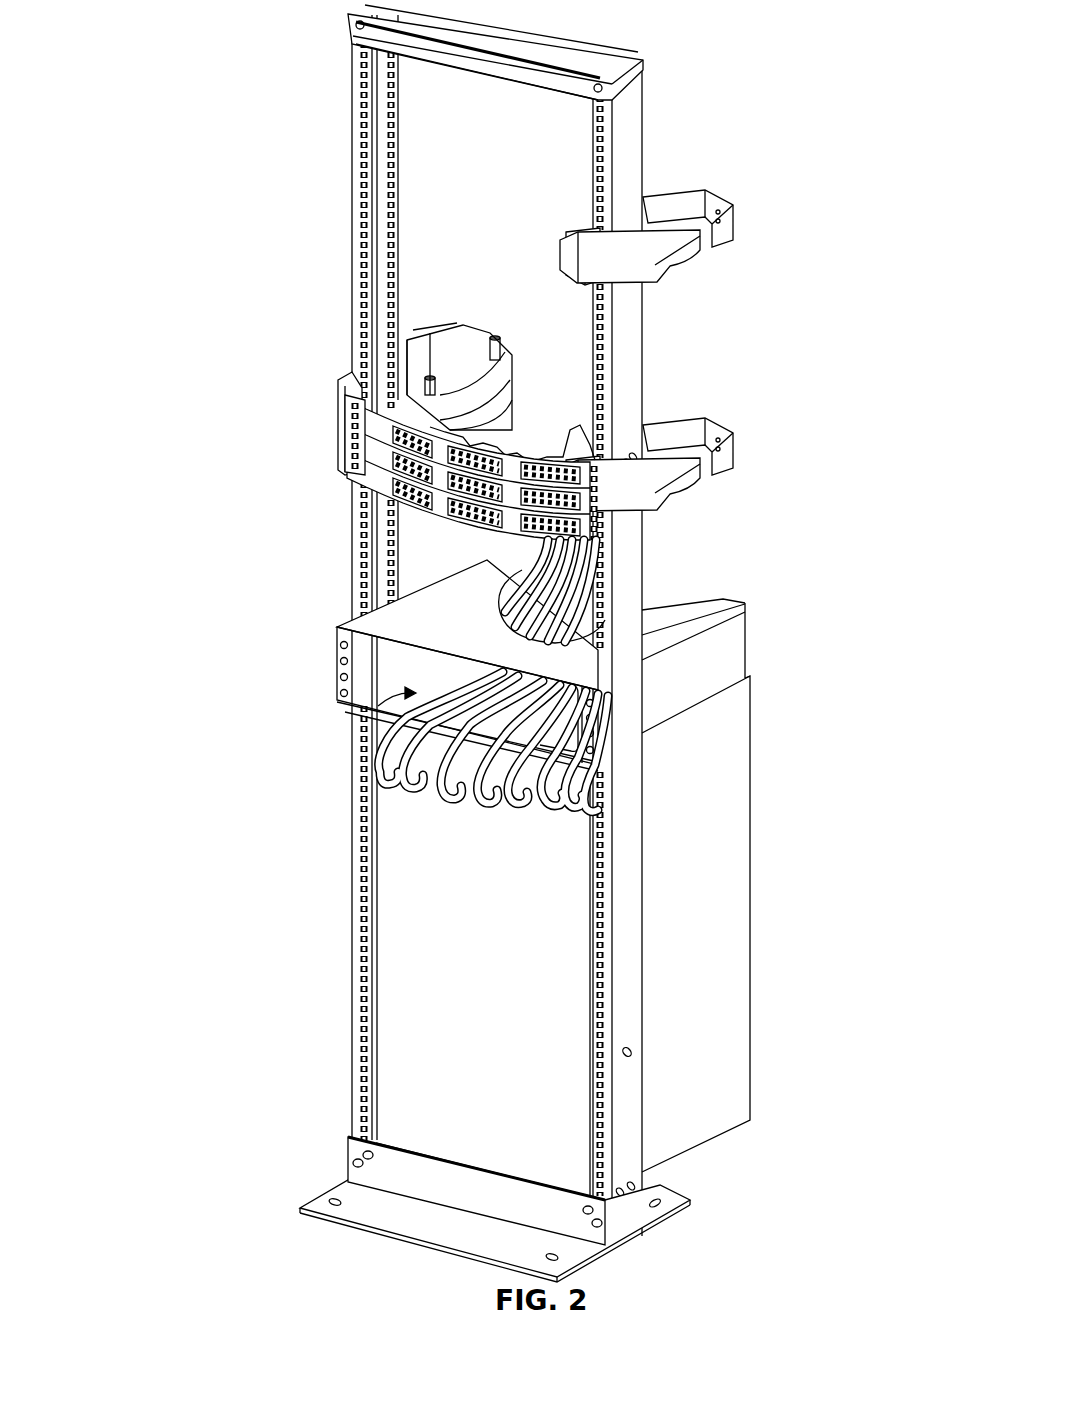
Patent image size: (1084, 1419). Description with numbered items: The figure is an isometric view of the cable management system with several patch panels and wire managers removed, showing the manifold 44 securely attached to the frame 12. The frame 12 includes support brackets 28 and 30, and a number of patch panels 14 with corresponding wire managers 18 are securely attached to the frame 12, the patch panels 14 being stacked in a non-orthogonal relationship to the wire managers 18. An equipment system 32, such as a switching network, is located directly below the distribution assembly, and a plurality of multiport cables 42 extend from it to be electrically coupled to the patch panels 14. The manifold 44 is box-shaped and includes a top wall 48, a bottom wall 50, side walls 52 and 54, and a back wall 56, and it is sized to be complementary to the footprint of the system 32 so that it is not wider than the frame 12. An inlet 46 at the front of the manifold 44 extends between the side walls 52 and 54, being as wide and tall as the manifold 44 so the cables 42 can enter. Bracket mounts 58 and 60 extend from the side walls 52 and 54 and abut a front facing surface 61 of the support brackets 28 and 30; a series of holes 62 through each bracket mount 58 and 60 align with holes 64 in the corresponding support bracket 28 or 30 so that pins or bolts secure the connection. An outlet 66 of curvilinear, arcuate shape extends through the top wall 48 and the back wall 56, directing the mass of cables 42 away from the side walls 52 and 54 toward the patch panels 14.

The frame 12 is at (582, 36).
The patch panel 14 is at (347, 418).
The wire manager 18 is at (732, 228).
The support bracket 28 is at (625, 918).
The support bracket 30 is at (360, 916).
The equipment system 32 is at (494, 998).
The multiport cable 42 is at (385, 772).
The manifold 44 is at (726, 866).
The inlet 46 is at (378, 706).
The top wall 48 is at (732, 600).
The bottom wall 50 is at (380, 723).
The side wall 52 is at (710, 677).
The side wall 54 is at (482, 673).
The back wall 56 is at (657, 615).
The bracket mount 58 is at (595, 708).
The bracket mount 60 is at (340, 668).
The front facing surface 61 is at (365, 510).
The holes 62 is at (340, 645).
The holes 64 is at (365, 590).
The outlet 66 is at (522, 580).